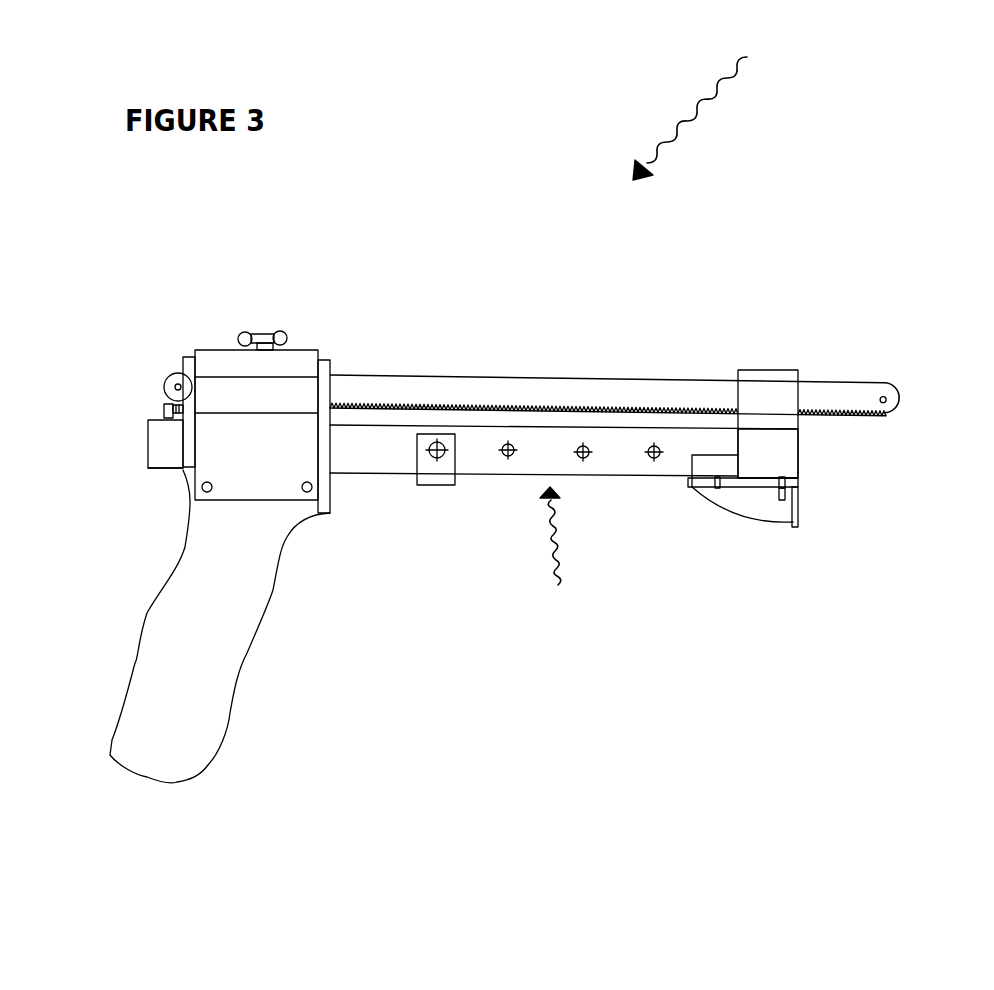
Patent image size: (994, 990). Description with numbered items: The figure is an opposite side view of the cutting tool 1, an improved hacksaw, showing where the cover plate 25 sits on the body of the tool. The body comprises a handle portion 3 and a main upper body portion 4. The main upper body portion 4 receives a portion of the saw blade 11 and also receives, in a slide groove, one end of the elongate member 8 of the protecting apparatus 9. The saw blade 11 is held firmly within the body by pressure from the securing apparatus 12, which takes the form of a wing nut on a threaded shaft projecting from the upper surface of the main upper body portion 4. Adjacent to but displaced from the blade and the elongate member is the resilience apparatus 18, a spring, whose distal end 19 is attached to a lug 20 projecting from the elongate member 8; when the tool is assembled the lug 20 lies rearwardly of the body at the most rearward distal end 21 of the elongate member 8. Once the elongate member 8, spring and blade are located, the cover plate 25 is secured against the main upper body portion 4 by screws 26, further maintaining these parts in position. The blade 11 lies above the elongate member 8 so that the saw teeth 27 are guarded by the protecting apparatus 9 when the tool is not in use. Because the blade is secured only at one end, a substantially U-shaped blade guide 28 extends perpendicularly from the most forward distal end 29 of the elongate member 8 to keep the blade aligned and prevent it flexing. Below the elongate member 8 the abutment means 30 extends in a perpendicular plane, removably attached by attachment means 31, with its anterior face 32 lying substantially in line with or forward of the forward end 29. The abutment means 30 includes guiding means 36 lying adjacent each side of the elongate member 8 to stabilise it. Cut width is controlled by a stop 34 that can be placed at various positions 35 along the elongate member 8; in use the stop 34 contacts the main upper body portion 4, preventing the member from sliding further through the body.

The tool 1 is at (698, 103).
The handle portion 3 is at (197, 733).
The main upper body portion 4 is at (193, 465).
The elongate member 8 is at (482, 450).
The protecting apparatus 9 is at (551, 551).
The saw blade 11 is at (502, 330).
The securing apparatus 12 is at (243, 335).
The resilience apparatus 18 is at (172, 418).
The distal end of the resilience apparatus 19 is at (164, 412).
The lug 20 is at (172, 407).
The most rearward distal end of the elongate member 21 is at (163, 470).
The cover plate 25 is at (295, 367).
The screws 26 is at (308, 490).
The saw teeth 27 is at (492, 405).
The blade guide 28 is at (765, 370).
The most forward distal end of the elongate member 29 is at (798, 452).
The abutment means 30 is at (748, 497).
The attachment means 31 is at (718, 489).
The anterior face 32 is at (797, 505).
The stop 34 is at (427, 462).
The positions 35 is at (510, 448).
The guiding means 36 is at (703, 465).